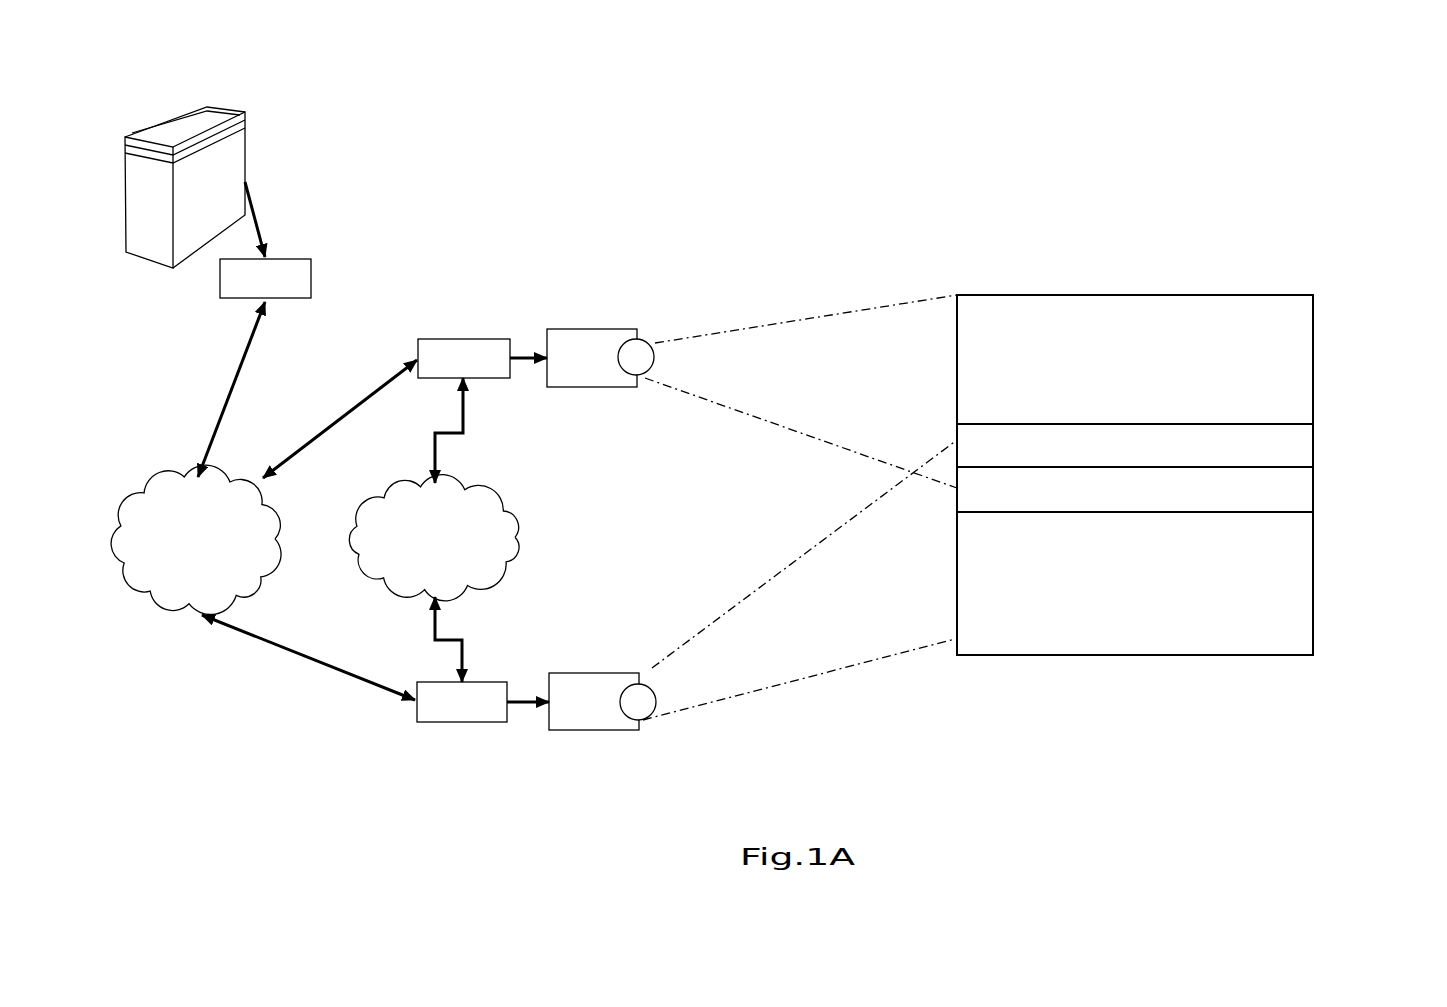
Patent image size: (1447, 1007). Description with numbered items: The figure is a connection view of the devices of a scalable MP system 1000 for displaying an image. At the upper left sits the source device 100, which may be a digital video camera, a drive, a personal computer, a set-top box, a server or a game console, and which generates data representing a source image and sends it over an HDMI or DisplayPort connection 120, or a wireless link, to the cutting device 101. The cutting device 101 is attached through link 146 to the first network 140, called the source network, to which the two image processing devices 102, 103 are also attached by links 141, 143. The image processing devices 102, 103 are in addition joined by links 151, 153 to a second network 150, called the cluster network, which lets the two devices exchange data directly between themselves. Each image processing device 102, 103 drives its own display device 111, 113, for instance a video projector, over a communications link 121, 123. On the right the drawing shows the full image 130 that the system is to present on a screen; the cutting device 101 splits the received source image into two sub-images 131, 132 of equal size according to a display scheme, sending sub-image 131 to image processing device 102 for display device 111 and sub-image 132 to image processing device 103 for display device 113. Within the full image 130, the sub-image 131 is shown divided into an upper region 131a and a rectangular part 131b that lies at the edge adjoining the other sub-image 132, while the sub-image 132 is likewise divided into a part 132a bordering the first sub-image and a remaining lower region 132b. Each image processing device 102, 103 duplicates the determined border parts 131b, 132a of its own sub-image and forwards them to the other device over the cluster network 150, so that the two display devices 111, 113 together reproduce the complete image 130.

The MP system 1000 is at (730, 220).
The source device 100 is at (168, 118).
The cutting device 101 is at (322, 257).
The connection 120 is at (263, 203).
The link 146 is at (232, 370).
The first network 140 is at (137, 507).
The link 141 is at (340, 415).
The link 143 is at (310, 662).
The image processing device 102 is at (457, 347).
The image processing device 103 is at (455, 700).
The communications link 121 is at (512, 350).
The communications link 123 is at (535, 700).
The display device 111 is at (602, 338).
The display device 113 is at (603, 682).
The second network 150 is at (383, 510).
The link 151 is at (468, 430).
The link 153 is at (433, 633).
The full image 130 is at (1270, 287).
The sub-image 131 is at (1068, 292).
The sub-image 132 is at (1113, 640).
The first sub-region of first display region 131a is at (1292, 375).
The rectangular part 131b is at (1295, 450).
The determined part 132a is at (1295, 483).
The second sub-region of second display region 132b is at (1292, 550).